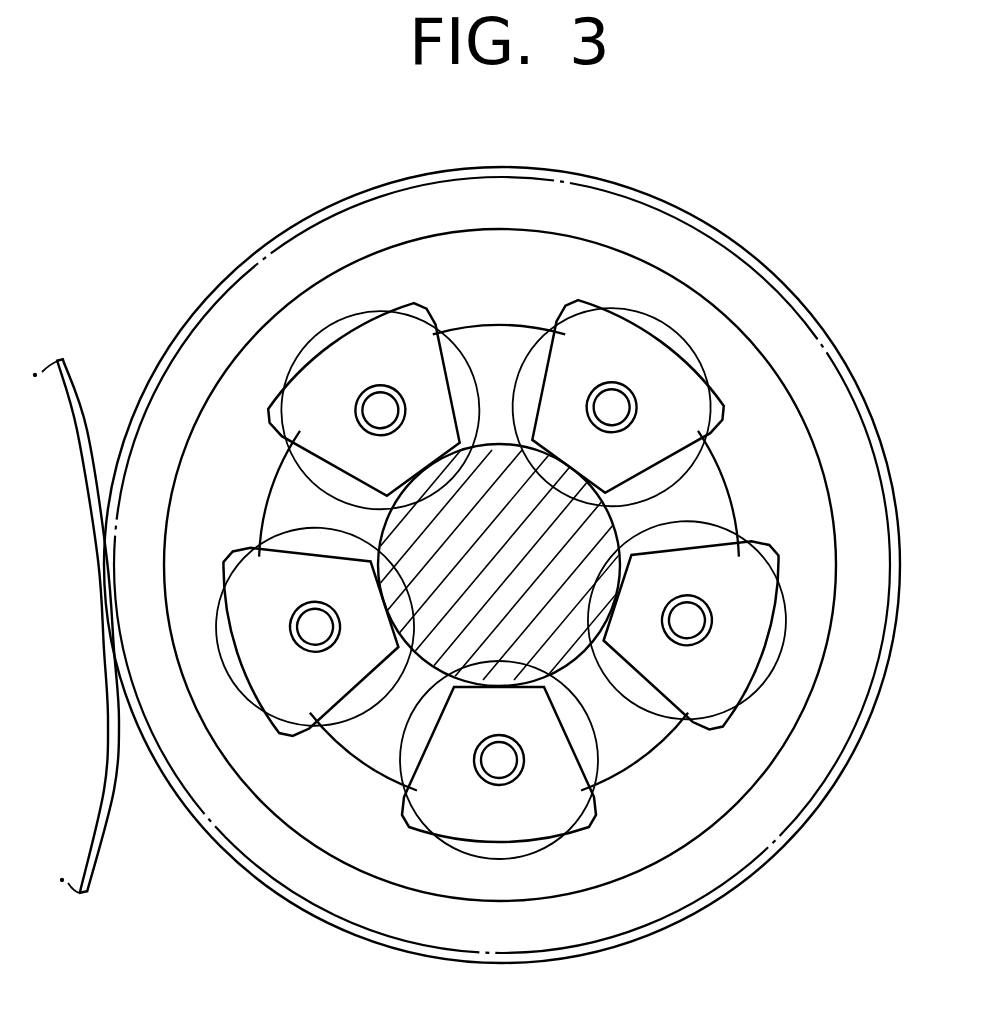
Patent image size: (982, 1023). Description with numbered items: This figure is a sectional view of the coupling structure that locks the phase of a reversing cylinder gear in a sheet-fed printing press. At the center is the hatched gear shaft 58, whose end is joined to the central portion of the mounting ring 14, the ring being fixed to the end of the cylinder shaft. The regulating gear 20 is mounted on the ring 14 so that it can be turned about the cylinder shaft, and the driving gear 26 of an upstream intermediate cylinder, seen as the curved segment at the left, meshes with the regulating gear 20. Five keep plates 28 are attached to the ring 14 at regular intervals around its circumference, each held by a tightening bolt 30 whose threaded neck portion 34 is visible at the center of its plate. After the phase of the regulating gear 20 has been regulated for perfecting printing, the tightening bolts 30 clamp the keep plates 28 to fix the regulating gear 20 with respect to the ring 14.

The mounting ring 14 is at (706, 475).
The regulating gear 20 is at (722, 893).
The driving gear 26 is at (103, 813).
The keep plate 28 is at (313, 397).
The tightening bolt 30 is at (381, 398).
The neck portion 34 is at (500, 564).
The gear shaft 58 is at (442, 648).